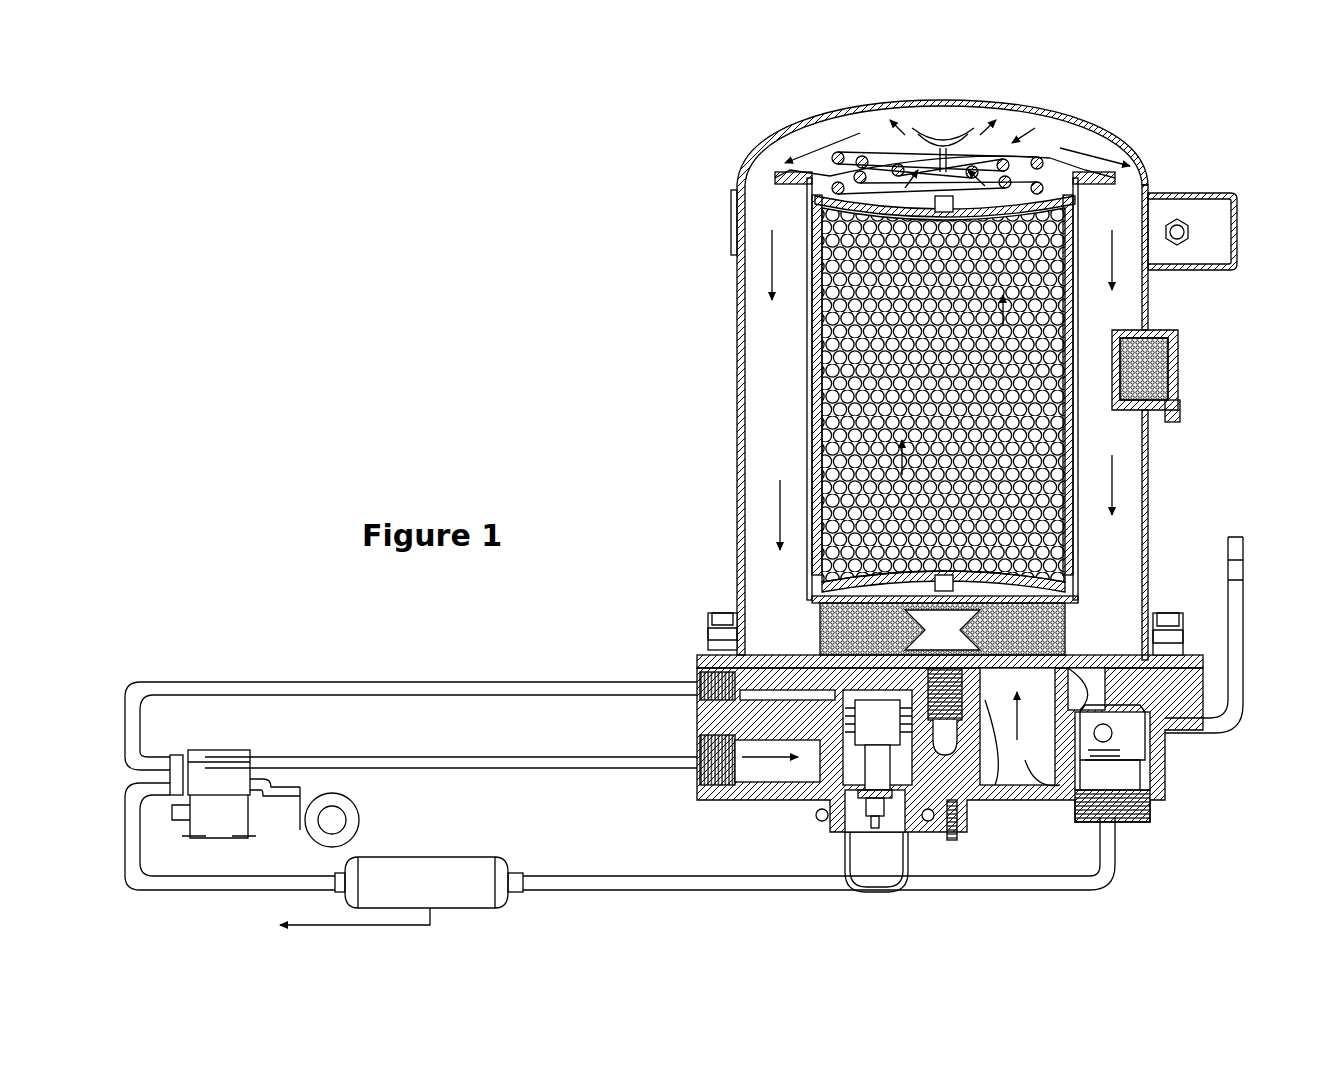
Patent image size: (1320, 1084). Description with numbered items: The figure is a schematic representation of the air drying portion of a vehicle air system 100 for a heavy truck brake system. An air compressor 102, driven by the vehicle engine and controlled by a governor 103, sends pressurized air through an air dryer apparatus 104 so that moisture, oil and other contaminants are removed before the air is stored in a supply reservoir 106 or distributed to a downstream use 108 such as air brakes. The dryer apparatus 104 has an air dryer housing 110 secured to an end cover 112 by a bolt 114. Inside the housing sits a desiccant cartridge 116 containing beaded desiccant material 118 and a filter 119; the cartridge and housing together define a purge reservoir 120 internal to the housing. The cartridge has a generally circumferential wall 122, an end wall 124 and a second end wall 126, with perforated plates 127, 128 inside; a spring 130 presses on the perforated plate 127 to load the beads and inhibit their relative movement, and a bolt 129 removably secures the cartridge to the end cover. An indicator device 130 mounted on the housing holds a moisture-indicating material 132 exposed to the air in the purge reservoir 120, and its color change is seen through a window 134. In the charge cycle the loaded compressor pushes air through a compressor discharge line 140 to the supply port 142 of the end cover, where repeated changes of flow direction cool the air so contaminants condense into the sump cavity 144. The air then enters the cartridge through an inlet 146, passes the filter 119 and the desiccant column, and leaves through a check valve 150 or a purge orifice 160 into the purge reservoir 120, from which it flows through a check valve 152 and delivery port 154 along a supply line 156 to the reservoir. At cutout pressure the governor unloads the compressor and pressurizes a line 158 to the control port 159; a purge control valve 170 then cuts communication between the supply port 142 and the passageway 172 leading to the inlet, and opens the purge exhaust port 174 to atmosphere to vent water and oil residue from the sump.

The vehicle air system 100 is at (558, 292).
The air compressor 102 is at (205, 755).
The governor 103 is at (176, 770).
The air dryer apparatus 104 is at (708, 466).
The supply reservoir 106 is at (470, 900).
The downstream use 108 is at (327, 923).
The air dryer housing 110 is at (740, 568).
The end cover 112 is at (697, 672).
The bolt 114 is at (712, 633).
The desiccant cartridge 116 is at (800, 388).
The desiccant material 118 is at (850, 350).
The filter 119 is at (840, 625).
The purge reservoir 120 is at (1130, 297).
The circumferential wall 122 is at (820, 213).
The end wall 124 is at (870, 160).
The second end wall 126 is at (1050, 698).
The perforated plate 127 is at (850, 205).
The perforated plate 128 is at (860, 585).
The bolt 129 is at (985, 700).
The indicator device 130 is at (1075, 152).
The moisture-indicating material 132 is at (1178, 410).
The window 134 is at (1183, 362).
The compressor discharge line 140 is at (497, 757).
The supply port 142 is at (712, 750).
The sump cavity 144 is at (1030, 760).
The inlet 146 is at (1012, 690).
The check valve 150 is at (965, 148).
The check valve 152 is at (1115, 760).
The delivery port 154 is at (1120, 822).
The supply line 156 is at (628, 887).
The line 158 is at (488, 690).
The control port 159 is at (705, 695).
The purge orifice 160 is at (1005, 160).
The purge control valve 170 is at (870, 730).
The passageway 172 is at (967, 830).
The purge exhaust port 174 is at (865, 870).